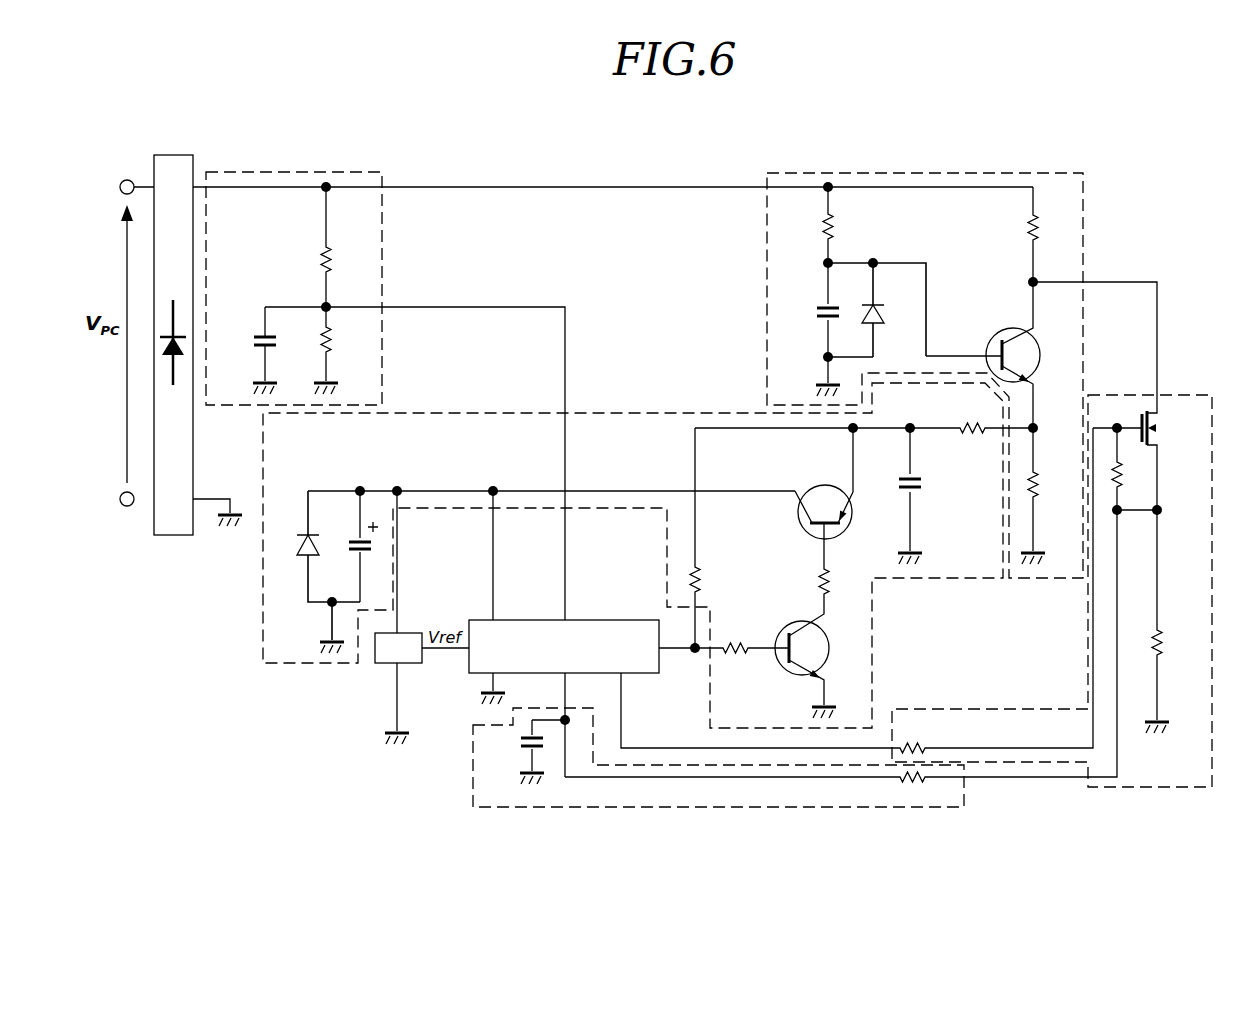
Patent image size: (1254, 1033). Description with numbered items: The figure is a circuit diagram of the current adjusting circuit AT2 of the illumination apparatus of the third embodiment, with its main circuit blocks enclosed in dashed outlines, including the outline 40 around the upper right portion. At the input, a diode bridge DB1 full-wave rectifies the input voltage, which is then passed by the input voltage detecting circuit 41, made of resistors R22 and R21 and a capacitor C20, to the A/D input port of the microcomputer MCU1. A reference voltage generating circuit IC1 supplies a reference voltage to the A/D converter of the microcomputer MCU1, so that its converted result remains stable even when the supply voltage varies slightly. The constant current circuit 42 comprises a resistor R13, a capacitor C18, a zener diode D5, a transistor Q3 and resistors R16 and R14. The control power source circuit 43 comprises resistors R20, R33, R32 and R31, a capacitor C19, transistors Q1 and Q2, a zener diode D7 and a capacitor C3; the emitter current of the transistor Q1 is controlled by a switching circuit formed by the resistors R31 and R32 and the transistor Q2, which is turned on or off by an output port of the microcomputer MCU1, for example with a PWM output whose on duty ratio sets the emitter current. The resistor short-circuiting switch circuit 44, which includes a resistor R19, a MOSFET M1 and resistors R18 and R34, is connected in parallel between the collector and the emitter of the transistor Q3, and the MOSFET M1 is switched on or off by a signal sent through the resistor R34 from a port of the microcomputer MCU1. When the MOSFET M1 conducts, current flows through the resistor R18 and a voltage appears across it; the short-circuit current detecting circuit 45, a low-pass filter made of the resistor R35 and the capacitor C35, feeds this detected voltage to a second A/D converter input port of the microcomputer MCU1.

The power supply / detection circuit 40 is at (928, 162).
The input voltage detecting circuit 41 is at (337, 172).
The constant current circuit 42 is at (1005, 173).
The control power source circuit 43 is at (305, 665).
The resistor short-circuiting switch circuit 44 is at (1130, 788).
The short-circuit current detecting circuit 45 is at (873, 808).
The current adjusting circuit AT2 is at (735, 170).
The diode bridge DB1 is at (172, 332).
The resistor R13 is at (848, 225).
The resistor R14 is at (1049, 496).
The resistor R16 is at (1051, 234).
The resistor R18 is at (1159, 621).
The resistor R19 is at (1135, 469).
The resistor R20 is at (973, 415).
The resistor R21 is at (342, 350).
The resistor R22 is at (346, 247).
The resistor R31 is at (802, 560).
The resistor R32 is at (742, 635).
The resistor R33 is at (714, 538).
The resistor R34 is at (857, 590).
The resistor R35 is at (841, 658).
The capacitor C3 is at (369, 546).
The capacitor C18 is at (808, 329).
The capacitor C19 is at (929, 496).
The capacitor C20 is at (269, 350).
The capacitor C35 is at (522, 728).
The zener diode D5 is at (877, 310).
The zener diode D7 is at (315, 572).
The transistor Q1 is at (824, 483).
The transistor Q2 is at (816, 658).
The transistor Q3 is at (997, 355).
The MOSFET M1 is at (1166, 428).
The reference voltage generating circuit IC1 is at (422, 617).
The microcomputer MCU1 is at (583, 597).